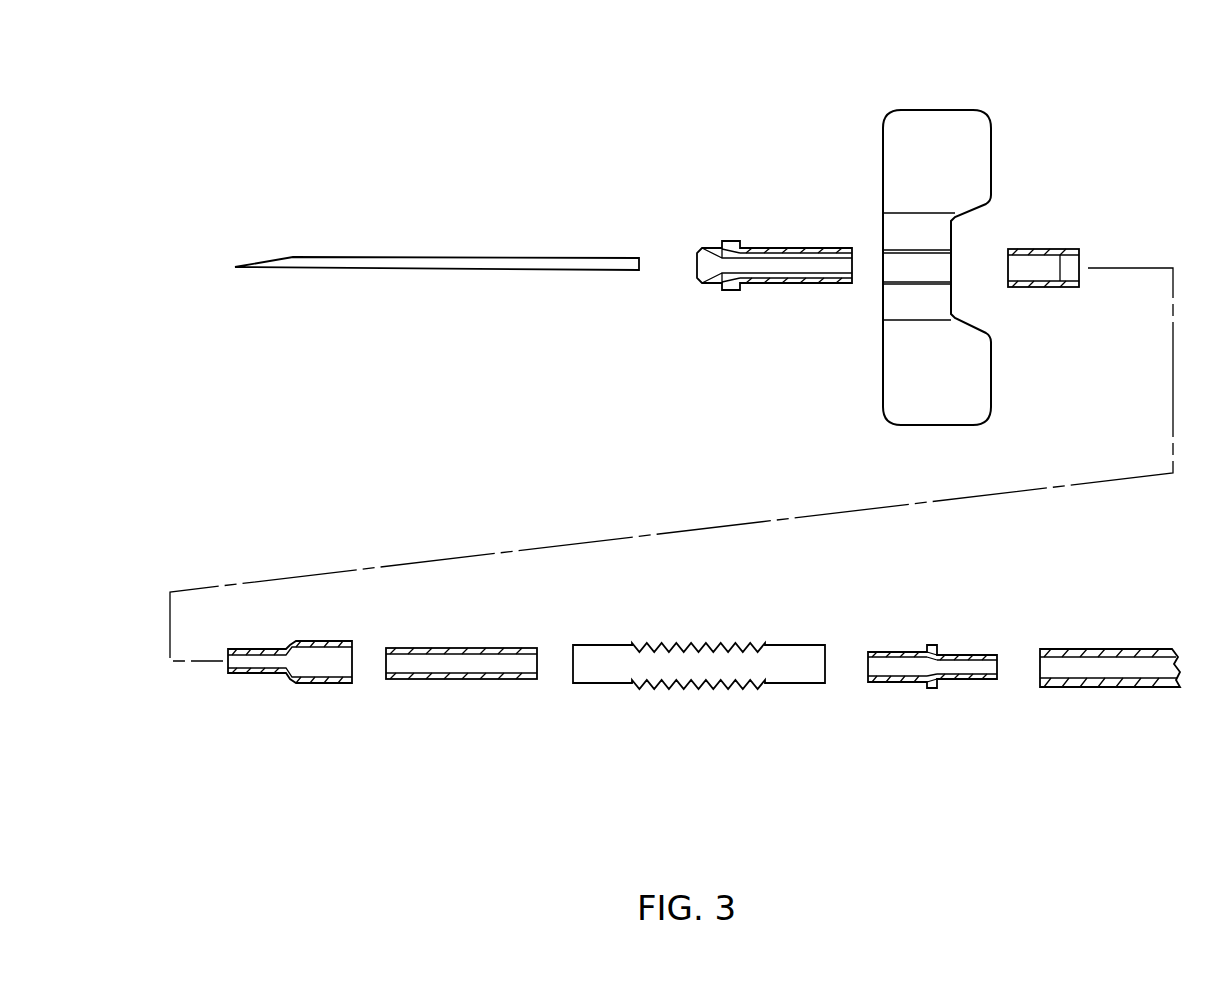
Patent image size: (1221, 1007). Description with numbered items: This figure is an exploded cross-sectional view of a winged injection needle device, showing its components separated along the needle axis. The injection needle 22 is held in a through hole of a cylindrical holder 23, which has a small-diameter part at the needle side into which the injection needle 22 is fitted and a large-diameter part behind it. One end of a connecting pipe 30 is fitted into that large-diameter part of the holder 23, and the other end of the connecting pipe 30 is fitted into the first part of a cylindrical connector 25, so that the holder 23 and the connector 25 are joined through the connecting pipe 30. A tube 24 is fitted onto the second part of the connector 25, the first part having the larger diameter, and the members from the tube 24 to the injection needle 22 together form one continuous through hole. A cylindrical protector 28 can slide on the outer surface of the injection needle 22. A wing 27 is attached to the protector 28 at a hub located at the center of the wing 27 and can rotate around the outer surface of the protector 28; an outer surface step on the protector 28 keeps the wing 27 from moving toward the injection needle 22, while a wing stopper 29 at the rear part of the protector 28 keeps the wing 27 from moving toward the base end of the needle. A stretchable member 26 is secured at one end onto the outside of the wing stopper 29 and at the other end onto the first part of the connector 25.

The injection needle 22 is at (430, 259).
The holder 23 is at (305, 682).
The tube 24 is at (1070, 686).
The connector 25 is at (892, 680).
The stretchable member 26 is at (708, 683).
The wing 27 is at (985, 150).
The protector 28 is at (750, 248).
The wing stopper 29 is at (1045, 250).
The connecting pipe 30 is at (445, 679).